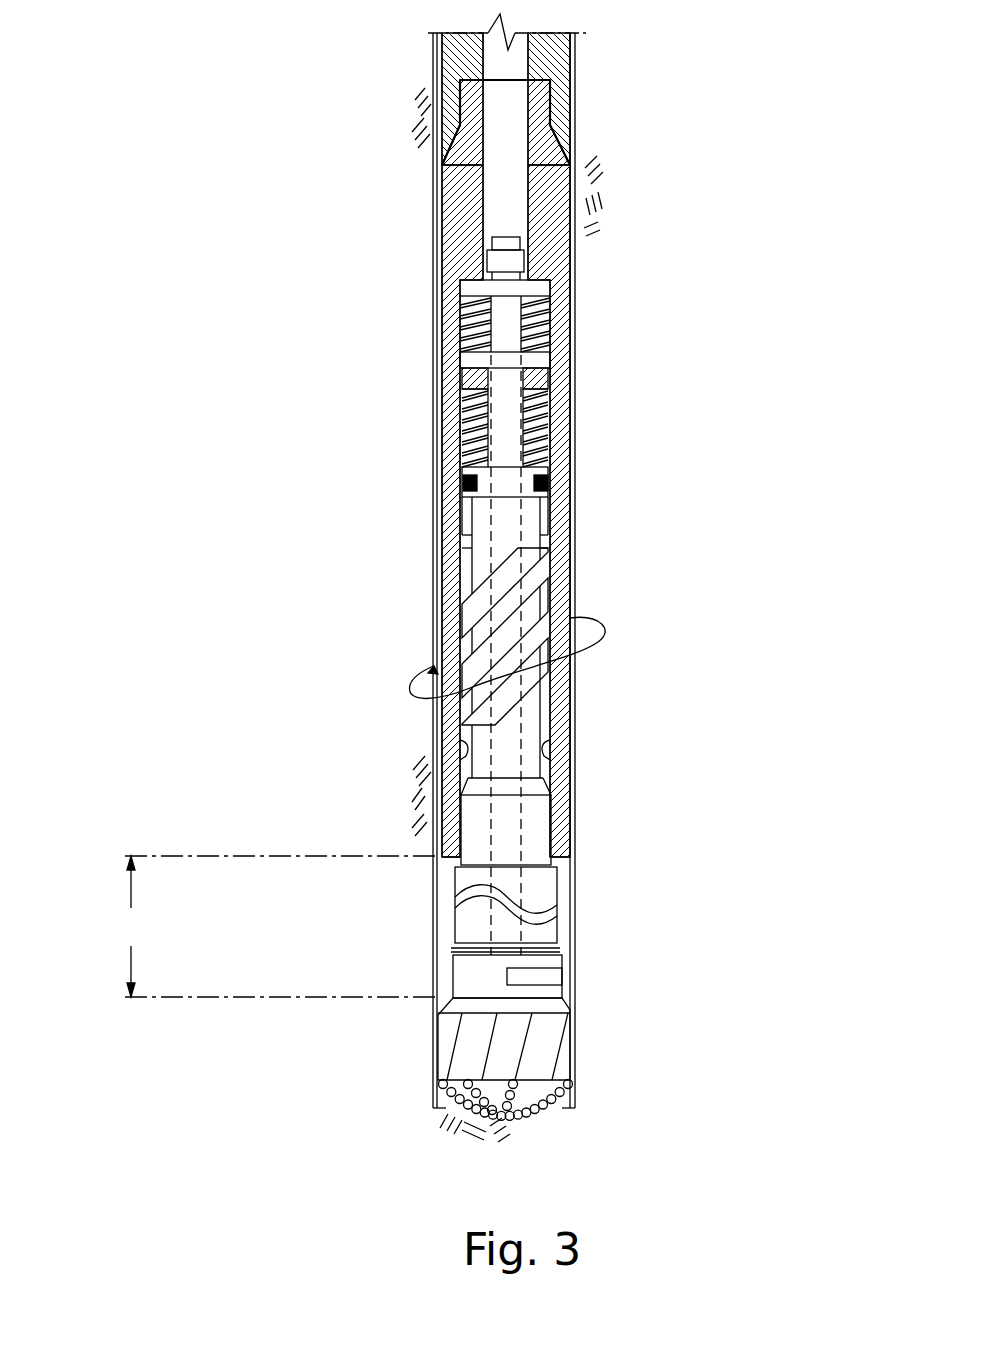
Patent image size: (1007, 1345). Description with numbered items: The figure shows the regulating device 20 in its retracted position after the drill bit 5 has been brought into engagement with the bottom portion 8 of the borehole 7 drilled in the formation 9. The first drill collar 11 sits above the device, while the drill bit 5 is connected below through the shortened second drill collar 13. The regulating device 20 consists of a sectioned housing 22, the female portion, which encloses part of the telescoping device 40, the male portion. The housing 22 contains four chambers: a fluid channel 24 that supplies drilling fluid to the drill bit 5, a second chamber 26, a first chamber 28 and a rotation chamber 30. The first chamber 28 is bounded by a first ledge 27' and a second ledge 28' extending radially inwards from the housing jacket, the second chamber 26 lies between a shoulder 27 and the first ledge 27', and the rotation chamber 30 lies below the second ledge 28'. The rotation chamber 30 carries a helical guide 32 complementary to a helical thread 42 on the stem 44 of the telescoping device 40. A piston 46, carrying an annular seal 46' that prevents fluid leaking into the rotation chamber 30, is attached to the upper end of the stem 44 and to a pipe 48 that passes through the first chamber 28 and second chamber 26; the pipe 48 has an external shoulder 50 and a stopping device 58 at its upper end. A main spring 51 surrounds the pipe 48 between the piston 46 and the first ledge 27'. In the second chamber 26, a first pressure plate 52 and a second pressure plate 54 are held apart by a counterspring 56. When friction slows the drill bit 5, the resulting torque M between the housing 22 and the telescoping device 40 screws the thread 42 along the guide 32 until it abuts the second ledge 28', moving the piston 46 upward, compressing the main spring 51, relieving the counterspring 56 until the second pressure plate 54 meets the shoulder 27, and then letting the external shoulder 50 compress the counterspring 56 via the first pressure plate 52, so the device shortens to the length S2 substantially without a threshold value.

The regulating device 20 is at (256, 104).
The first drill collar 11 is at (575, 48).
The fluid channel 24 is at (505, 116).
The housing 22 is at (442, 205).
The formation 9 is at (637, 207).
The stopping device 58 is at (524, 258).
The shoulder 27 is at (378, 282).
The second chamber 26 is at (515, 300).
The second pressure plate 54 is at (462, 298).
The counterspring 56 is at (545, 335).
The first pressure plate 52 is at (462, 362).
The first ledge 27' is at (624, 389).
The first chamber 28 is at (633, 428).
The pipe 48 is at (510, 458).
The external shoulder 50 is at (462, 395).
The main spring 51 is at (462, 438).
The piston 46 is at (620, 488).
The annular seal 46' is at (342, 487).
The rotation chamber 30 is at (548, 552).
The second ledge 28' is at (377, 567).
The helical thread 42 is at (535, 580).
The helical guide 32 is at (548, 705).
The telescoping device 40 is at (446, 641).
The torque M is at (525, 657).
The stem 44 is at (472, 745).
The second drill collar 13 is at (557, 882).
The borehole 7 is at (455, 928).
The length S2 is at (274, 926).
The drill bit 5 is at (565, 1045).
The bottom portion 8 is at (545, 1105).